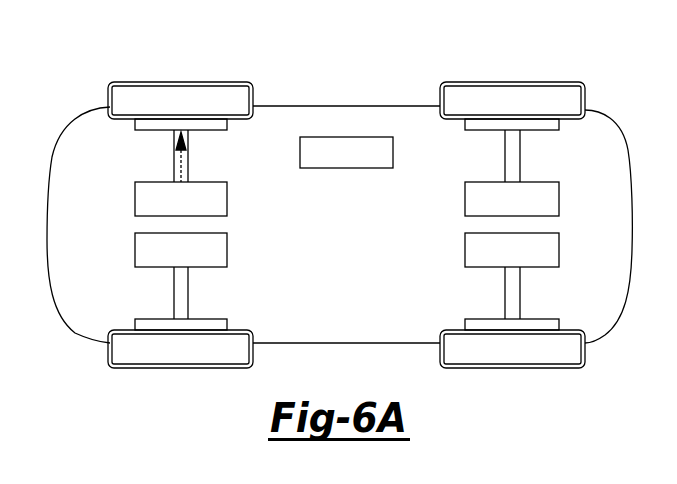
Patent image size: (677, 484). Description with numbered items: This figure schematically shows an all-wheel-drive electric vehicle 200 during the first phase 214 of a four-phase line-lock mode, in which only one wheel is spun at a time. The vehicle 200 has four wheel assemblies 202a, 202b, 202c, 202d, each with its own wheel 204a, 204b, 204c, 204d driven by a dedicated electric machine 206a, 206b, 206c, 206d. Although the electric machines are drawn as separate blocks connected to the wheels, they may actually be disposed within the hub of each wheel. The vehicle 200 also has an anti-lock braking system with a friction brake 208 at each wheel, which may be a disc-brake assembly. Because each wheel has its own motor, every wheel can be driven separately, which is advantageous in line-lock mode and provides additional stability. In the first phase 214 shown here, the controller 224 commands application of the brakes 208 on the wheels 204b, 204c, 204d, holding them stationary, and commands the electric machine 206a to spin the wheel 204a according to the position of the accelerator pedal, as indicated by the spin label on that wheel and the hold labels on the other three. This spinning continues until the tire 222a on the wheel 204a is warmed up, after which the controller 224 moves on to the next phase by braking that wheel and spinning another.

The electric vehicle 200 is at (336, 105).
The wheel assembly 202a is at (177, 98).
The wheel assembly 202b is at (538, 78).
The wheel assembly 202c is at (154, 372).
The wheel assembly 202d is at (540, 372).
The wheel 204a is at (202, 70).
The wheel 204b is at (550, 97).
The wheel 204c is at (139, 352).
The wheel 204d is at (550, 352).
The electric machine 206a is at (192, 211).
The electric machine 206b is at (523, 211).
The electric machine 206c is at (192, 262).
The electric machine 206d is at (523, 262).
The friction brake 208 is at (207, 129).
The first phase 214 is at (339, 176).
The tire 222a is at (223, 95).
The controller 224 is at (358, 165).